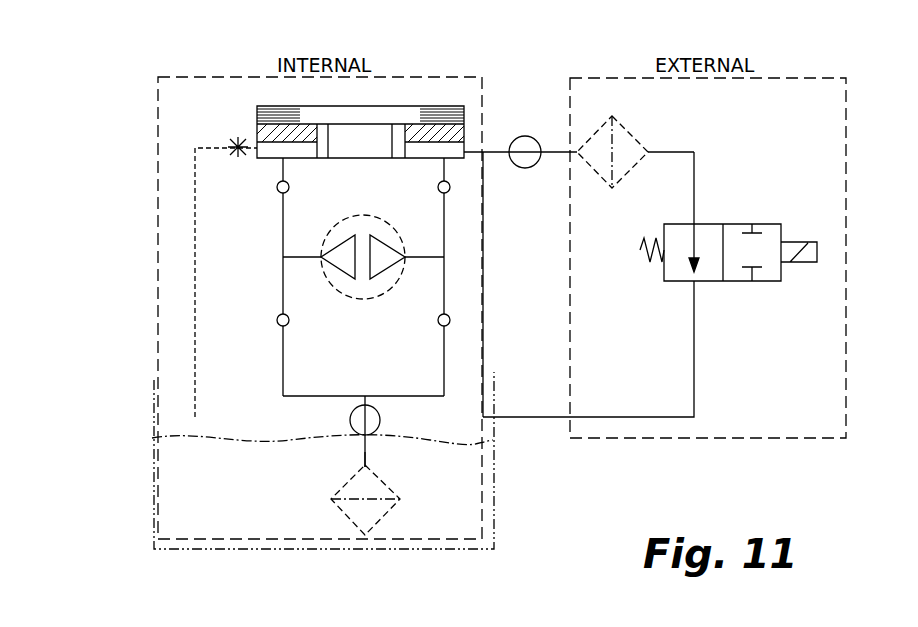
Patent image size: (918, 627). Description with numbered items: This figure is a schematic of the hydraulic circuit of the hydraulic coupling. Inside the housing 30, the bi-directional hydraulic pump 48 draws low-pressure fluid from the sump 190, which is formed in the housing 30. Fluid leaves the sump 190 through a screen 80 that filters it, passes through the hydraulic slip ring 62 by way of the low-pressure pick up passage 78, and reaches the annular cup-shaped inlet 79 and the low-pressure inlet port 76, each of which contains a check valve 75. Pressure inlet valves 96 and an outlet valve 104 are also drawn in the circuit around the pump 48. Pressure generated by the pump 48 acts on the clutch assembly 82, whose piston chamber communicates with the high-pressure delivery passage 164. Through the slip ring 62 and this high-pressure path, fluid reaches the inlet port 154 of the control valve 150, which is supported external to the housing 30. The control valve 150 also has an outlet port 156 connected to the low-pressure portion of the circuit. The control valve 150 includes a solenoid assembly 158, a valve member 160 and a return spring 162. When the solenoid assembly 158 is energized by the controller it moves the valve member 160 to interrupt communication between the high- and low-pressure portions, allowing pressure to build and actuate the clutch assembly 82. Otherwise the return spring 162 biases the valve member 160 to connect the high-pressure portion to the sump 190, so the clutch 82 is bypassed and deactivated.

The housing 30 is at (157, 103).
The outlet valve 104 is at (238, 147).
The clutch assembly 82 is at (373, 107).
The bi-directional hydraulic pump 48 is at (353, 216).
The pressure inlet valves 96 is at (275, 193).
The check valve 75 is at (277, 325).
The low-pressure inlet port 76 is at (285, 353).
The annular cup-shaped inlet 79 is at (368, 395).
The hydraulic slip ring 62 is at (380, 418).
The low-pressure pick up passage 78 is at (367, 453).
The screen 80 is at (378, 525).
The sump 190 is at (493, 490).
The high-pressure delivery passage 164 is at (492, 155).
The inlet port 154 is at (668, 152).
The outlet port 156 is at (697, 328).
The control valve 150 is at (785, 226).
The valve member 160 is at (725, 250).
The solenoid assembly 158 is at (805, 262).
The return spring 162 is at (640, 250).